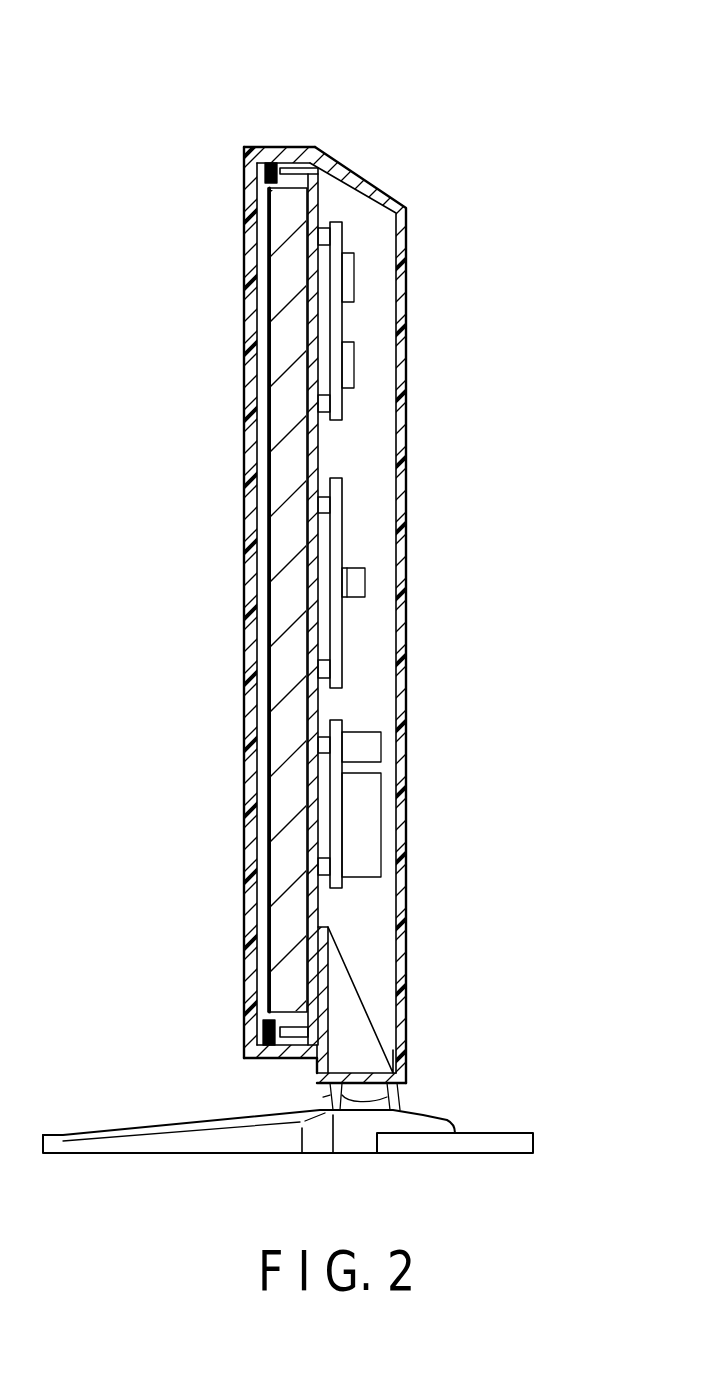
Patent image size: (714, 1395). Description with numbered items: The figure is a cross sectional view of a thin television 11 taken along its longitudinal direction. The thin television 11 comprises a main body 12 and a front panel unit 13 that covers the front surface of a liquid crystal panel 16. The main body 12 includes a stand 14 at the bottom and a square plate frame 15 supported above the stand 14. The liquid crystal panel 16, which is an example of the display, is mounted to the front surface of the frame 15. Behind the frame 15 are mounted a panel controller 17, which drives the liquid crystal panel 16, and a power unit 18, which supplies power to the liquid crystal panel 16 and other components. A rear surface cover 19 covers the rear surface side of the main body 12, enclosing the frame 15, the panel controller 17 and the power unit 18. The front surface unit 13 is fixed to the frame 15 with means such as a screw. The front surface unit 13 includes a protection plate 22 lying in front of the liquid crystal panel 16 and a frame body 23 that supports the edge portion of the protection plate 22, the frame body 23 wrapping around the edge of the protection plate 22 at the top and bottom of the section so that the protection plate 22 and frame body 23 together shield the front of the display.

The thin television 11 is at (280, 93).
The main body 12 is at (440, 307).
The front panel unit 13 is at (234, 140).
The stand 14 is at (197, 1120).
The frame 15 is at (312, 707).
The liquid crystal panel 16 is at (268, 292).
The panel controller 17 is at (343, 232).
The power unit 18 is at (382, 808).
The rear surface cover 19 is at (405, 455).
The protection plate 22 is at (252, 430).
The frame body 23 is at (262, 150).